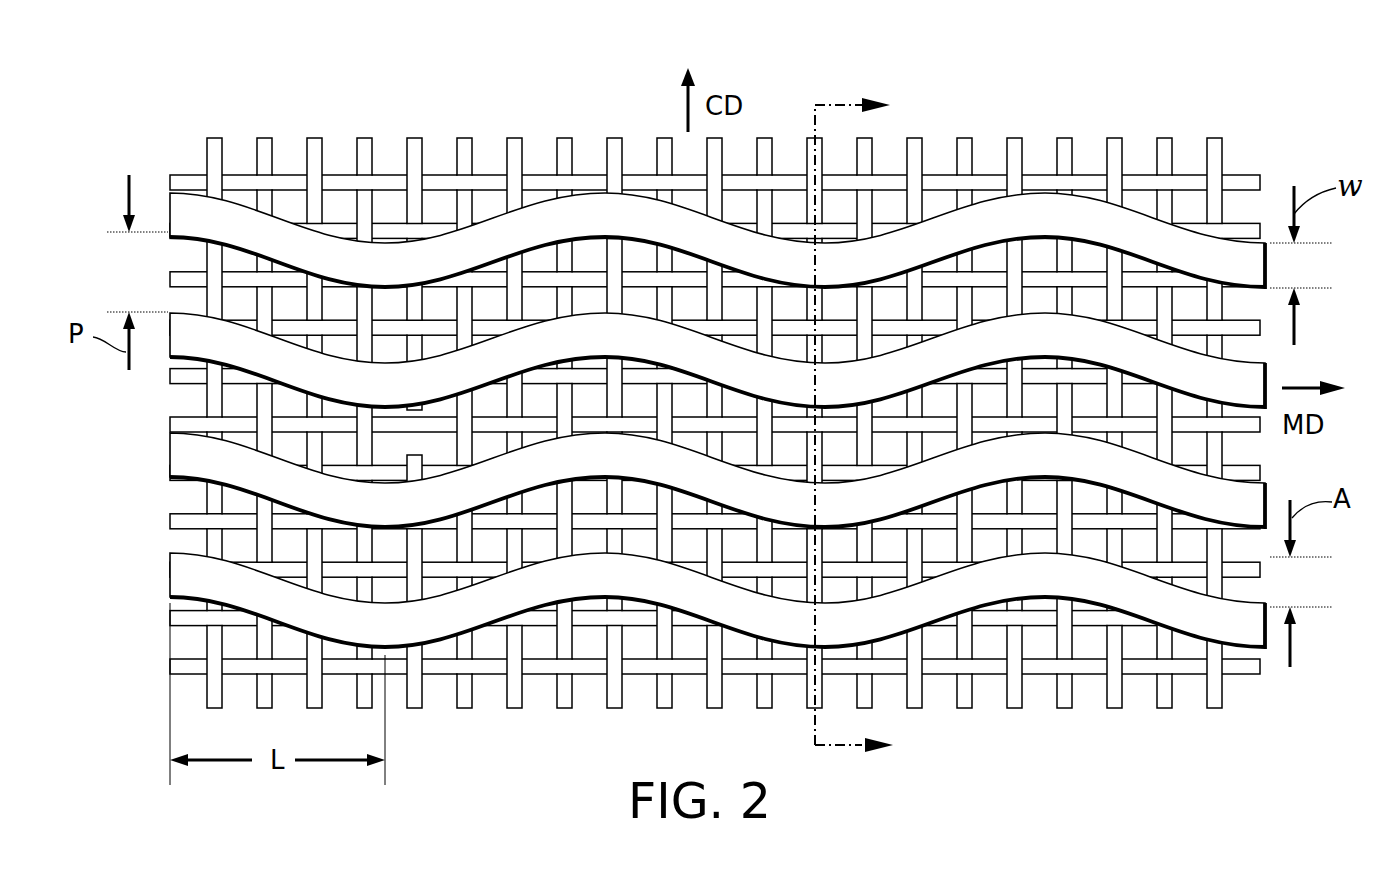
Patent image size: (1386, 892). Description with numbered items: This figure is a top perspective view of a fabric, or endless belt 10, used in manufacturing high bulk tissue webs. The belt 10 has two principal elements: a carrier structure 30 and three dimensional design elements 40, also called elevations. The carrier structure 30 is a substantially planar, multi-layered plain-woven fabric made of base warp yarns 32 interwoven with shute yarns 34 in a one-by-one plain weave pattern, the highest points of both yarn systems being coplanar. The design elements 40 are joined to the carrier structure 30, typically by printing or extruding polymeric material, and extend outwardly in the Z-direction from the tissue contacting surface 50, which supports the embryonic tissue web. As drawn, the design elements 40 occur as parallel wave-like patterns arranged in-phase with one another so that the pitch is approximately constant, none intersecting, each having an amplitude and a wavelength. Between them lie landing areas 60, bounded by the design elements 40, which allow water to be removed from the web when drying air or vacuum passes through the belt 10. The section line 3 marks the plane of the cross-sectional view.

The endless belt 10 is at (692, 396).
The carrier structure 30 is at (438, 205).
The base warp yarns 32 is at (185, 180).
The shute yarns 34 is at (210, 146).
The design elements 40 is at (433, 623).
The tissue contacting surface 50 is at (430, 453).
The landing areas 60 is at (493, 305).
The section line 3- 3 is at (865, 428).